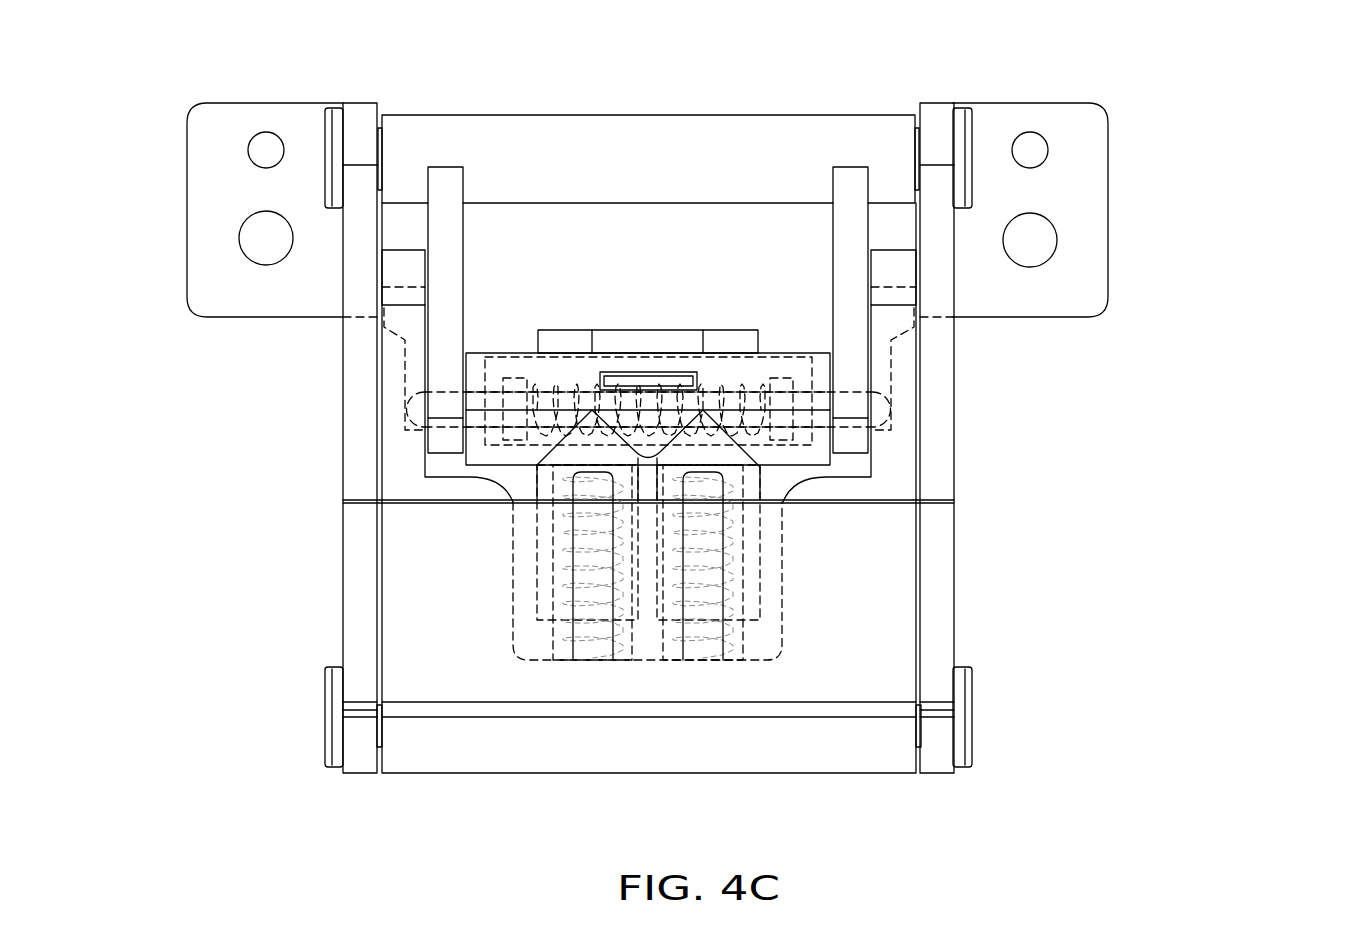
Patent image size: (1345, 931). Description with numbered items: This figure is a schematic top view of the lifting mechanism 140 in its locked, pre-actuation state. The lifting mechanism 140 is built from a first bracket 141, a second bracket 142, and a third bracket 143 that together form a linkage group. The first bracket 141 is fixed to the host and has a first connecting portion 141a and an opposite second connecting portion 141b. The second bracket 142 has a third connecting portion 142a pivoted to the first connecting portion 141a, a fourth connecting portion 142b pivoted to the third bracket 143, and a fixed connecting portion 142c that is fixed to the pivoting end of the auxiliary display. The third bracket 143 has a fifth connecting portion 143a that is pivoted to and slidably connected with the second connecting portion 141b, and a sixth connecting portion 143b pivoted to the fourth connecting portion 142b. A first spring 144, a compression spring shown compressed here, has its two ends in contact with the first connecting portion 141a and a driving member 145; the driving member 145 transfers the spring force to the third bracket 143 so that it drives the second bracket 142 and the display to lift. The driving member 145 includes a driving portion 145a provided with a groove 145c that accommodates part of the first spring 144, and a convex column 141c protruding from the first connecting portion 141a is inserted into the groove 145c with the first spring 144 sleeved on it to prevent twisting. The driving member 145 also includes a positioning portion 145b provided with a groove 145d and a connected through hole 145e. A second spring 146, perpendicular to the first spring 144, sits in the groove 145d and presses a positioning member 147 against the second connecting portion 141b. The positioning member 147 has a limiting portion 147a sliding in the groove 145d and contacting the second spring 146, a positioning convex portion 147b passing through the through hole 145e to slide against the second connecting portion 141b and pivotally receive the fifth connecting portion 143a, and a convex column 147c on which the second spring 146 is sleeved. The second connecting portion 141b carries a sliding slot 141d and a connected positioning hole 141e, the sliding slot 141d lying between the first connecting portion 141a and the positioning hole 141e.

The lifting mechanism 140 is at (717, 434).
The first bracket 141 is at (834, 434).
The first connecting portion 141a is at (675, 747).
The second connecting portion 141b is at (905, 339).
The convex column 141c is at (700, 653).
The sliding slot 141d is at (888, 367).
The positioning hole 141e is at (892, 287).
The second bracket 142 is at (724, 464).
The third connecting portion 142a is at (937, 747).
The fourth connecting portion 142b is at (937, 135).
The fixed connecting portion 142c is at (1080, 122).
The third bracket 143 is at (820, 258).
The fifth connecting portion 143a is at (853, 440).
The sixth connecting portion 143b is at (887, 142).
The first spring 144 is at (673, 640).
The driving member 145 is at (854, 434).
The driving portion 145a is at (752, 593).
The positioning portion 145b is at (518, 457).
The groove 145c is at (743, 565).
The groove 145d is at (810, 370).
The through hole 145e is at (822, 392).
The second spring 146 is at (718, 372).
The positioning member 147 is at (870, 490).
The limiting portion 147a is at (758, 432).
The positioning convex portion 147b is at (893, 410).
The convex column 147c is at (783, 428).